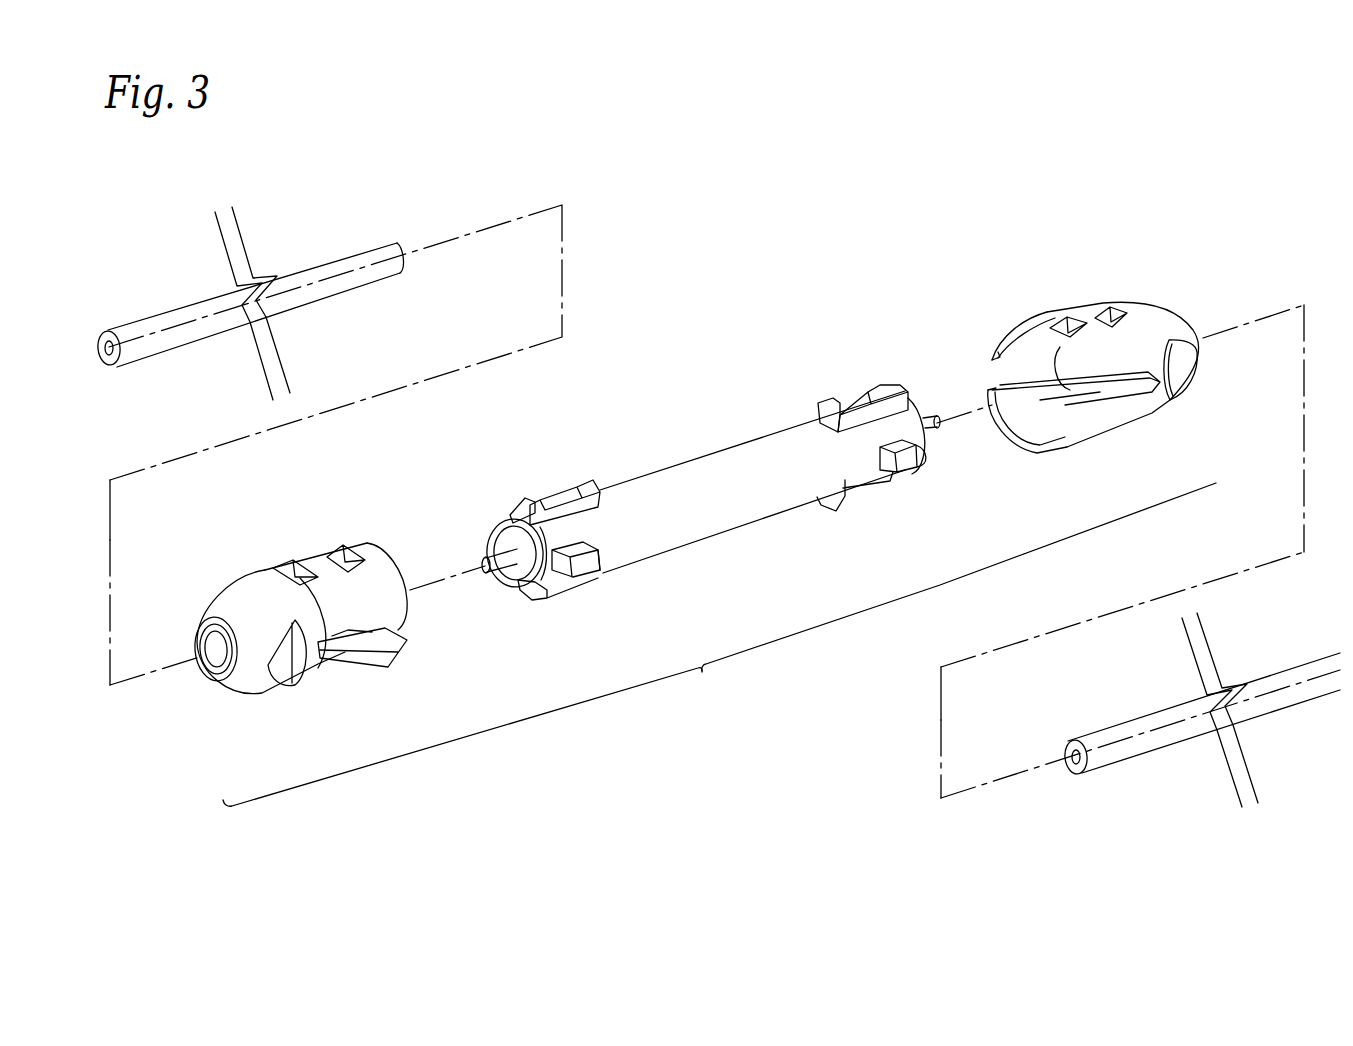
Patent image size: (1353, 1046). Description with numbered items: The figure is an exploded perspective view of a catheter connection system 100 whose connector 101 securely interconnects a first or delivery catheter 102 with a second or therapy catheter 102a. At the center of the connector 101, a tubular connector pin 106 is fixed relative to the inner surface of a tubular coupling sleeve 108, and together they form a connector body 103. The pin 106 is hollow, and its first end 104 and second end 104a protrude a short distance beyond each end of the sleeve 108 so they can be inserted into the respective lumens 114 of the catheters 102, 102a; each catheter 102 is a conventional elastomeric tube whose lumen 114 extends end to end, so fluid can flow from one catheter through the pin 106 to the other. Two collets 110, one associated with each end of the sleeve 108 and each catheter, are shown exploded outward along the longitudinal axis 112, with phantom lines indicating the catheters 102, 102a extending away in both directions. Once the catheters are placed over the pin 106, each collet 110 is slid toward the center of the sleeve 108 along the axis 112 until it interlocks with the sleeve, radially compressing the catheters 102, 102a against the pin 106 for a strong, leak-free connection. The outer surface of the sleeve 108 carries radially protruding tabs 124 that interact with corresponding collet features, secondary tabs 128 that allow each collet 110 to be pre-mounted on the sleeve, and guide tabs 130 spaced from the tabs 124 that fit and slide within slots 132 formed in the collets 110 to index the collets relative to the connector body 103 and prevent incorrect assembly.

The catheter connection system 100 is at (770, 212).
The connector 101 is at (705, 680).
The first or delivery catheter 102 is at (1183, 742).
The second or therapy catheter 102a is at (352, 248).
The connector body 103 is at (663, 508).
The first end of pin 104 is at (936, 415).
The second end of pin 104a is at (484, 560).
The tubular connector pin 106 is at (492, 570).
The tubular coupling sleeve 108 is at (703, 456).
The collet 110 is at (280, 697).
The longitudinal axis 112 is at (533, 212).
The lumen 114 is at (107, 355).
The tabs 124 is at (574, 480).
The secondary tabs 128 is at (528, 502).
The guide tabs 130 is at (603, 562).
The slots 132 is at (383, 627).